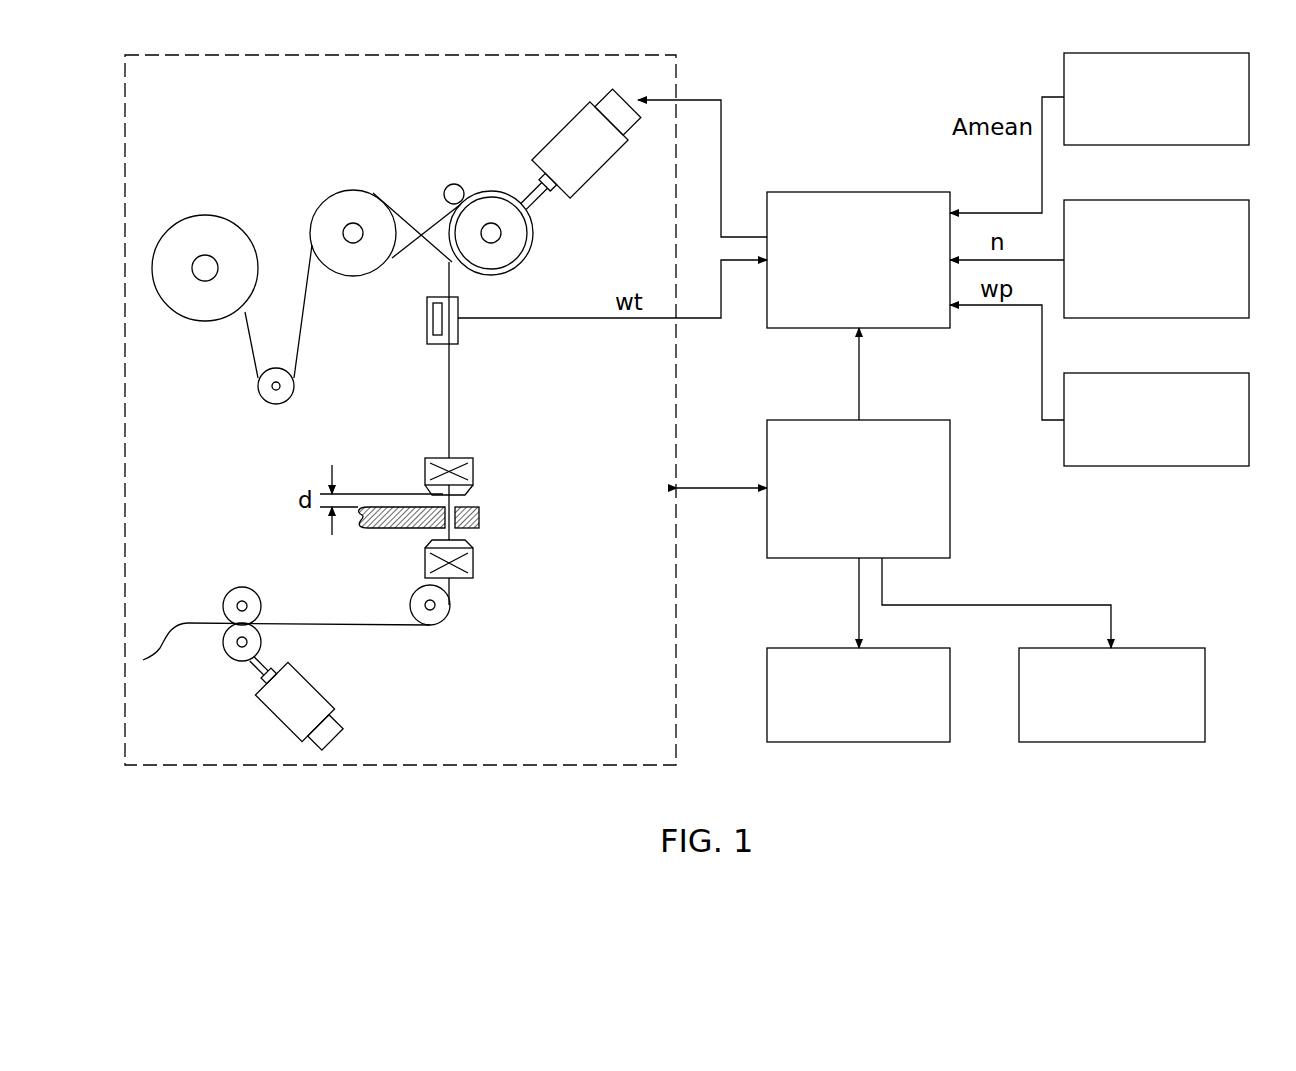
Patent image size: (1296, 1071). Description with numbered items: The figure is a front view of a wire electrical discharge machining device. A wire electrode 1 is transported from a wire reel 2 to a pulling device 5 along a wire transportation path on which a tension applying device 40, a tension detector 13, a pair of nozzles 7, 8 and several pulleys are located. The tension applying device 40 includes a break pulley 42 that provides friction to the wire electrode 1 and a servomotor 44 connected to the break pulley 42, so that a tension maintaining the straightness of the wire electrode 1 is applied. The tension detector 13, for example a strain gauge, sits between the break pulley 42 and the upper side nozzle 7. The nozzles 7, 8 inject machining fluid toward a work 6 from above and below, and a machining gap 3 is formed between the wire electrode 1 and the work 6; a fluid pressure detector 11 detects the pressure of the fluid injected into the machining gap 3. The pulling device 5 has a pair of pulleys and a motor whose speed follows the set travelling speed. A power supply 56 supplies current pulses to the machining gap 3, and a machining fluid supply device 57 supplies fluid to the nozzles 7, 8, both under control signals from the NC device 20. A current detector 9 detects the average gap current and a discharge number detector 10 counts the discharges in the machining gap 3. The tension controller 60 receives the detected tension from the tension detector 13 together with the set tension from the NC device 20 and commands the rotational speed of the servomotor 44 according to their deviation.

The wire electrode 1 is at (450, 388).
The wire reel 2 is at (225, 217).
The machining gap 3 is at (446, 526).
The pulling device 5 is at (229, 657).
The work 6 is at (479, 521).
The upper side nozzle 7 is at (473, 477).
The lower side nozzle 8 is at (473, 565).
The current detector 9 is at (1242, 53).
The discharge number detector 10 is at (1218, 190).
The fluid pressure detector 11 is at (1230, 362).
The tension detector 13 is at (427, 318).
The NC device 20 is at (793, 420).
The tension applying device 40 is at (507, 173).
The break pulley 42 is at (533, 242).
The servomotor 44 is at (556, 133).
The power supply 56 is at (799, 648).
The machining fluid supply device 57 is at (1205, 648).
The tension controller 60 is at (792, 192).